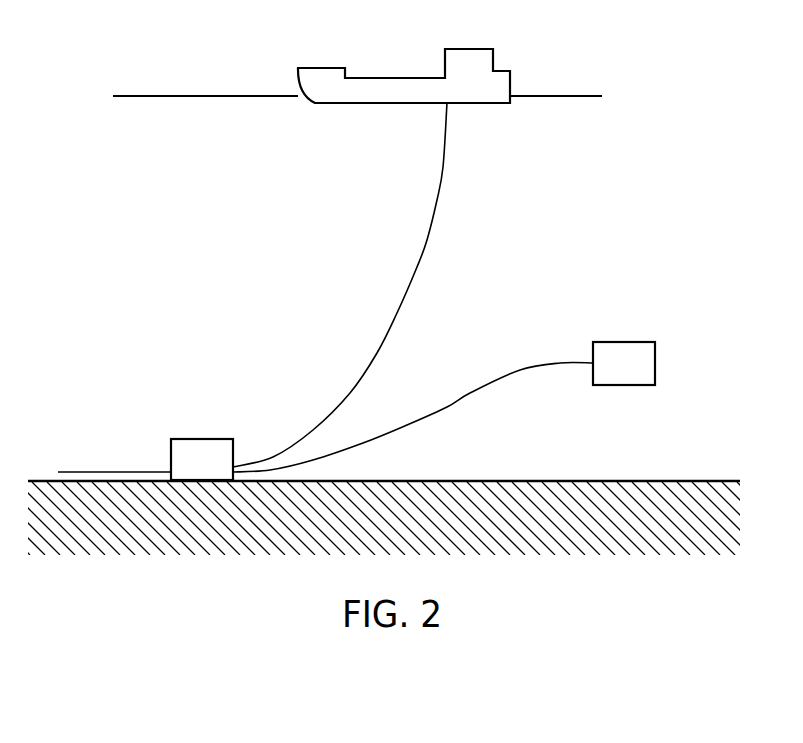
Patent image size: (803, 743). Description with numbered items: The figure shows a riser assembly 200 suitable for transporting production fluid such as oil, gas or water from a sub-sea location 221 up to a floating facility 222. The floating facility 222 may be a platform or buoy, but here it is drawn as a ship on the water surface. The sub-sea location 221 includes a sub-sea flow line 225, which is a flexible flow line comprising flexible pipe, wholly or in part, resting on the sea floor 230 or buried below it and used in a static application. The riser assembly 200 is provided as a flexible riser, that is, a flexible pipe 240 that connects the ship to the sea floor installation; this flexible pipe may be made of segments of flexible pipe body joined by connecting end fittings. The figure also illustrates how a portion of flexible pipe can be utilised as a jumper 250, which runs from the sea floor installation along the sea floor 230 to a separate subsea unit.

The riser assembly 200 is at (265, 277).
The sub-sea location 221 is at (197, 439).
The floating facility 222 is at (322, 68).
The sub-sea flow line 225 is at (115, 471).
The sea floor 230 is at (685, 481).
The flexible pipe 240 is at (390, 322).
The jumper 250 is at (520, 370).